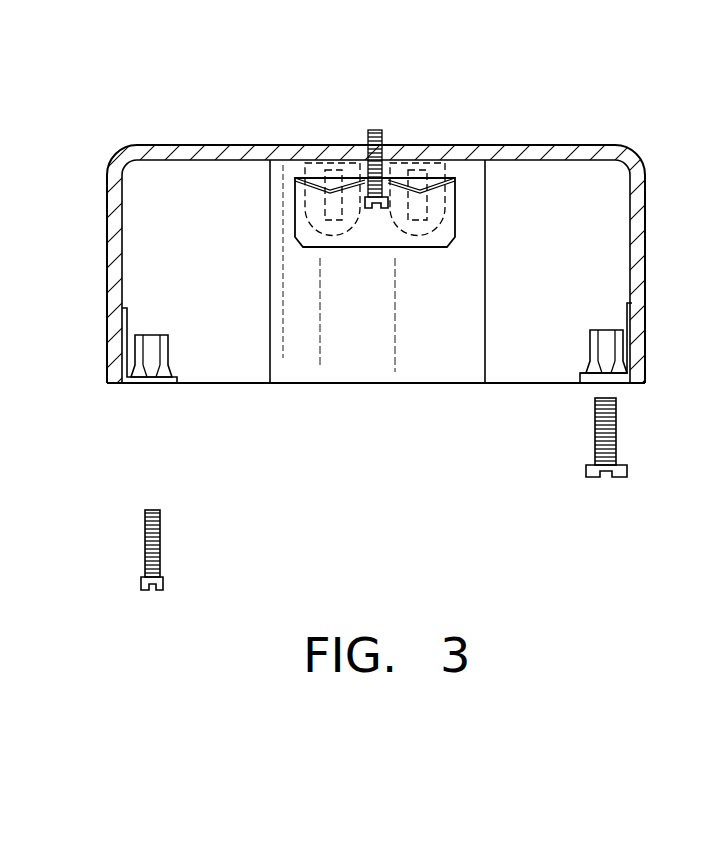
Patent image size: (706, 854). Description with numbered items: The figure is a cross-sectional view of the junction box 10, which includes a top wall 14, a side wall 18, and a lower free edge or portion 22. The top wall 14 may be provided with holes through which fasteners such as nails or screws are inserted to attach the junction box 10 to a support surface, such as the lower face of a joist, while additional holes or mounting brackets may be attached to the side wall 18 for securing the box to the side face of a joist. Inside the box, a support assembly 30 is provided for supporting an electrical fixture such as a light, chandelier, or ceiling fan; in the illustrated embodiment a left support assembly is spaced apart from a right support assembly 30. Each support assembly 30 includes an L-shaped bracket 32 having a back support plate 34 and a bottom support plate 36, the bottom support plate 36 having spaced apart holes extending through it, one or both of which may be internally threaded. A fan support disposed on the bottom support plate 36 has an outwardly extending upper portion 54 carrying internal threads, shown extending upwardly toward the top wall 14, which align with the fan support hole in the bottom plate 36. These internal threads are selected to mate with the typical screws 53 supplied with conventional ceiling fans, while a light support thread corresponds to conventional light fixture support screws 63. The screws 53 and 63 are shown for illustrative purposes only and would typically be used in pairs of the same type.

The junction box 10 is at (609, 112).
The top wall 14 is at (222, 145).
The side wall 18 is at (112, 234).
The lower free edge 22 is at (122, 385).
The support assembly 30 is at (178, 348).
The L-shaped bracket 32 is at (621, 317).
The back support plate 34 is at (628, 342).
The bottom support plate 36 is at (600, 374).
The screw 53 is at (618, 428).
The upper portion 54 is at (590, 342).
The light fixture support screw 63 is at (160, 540).